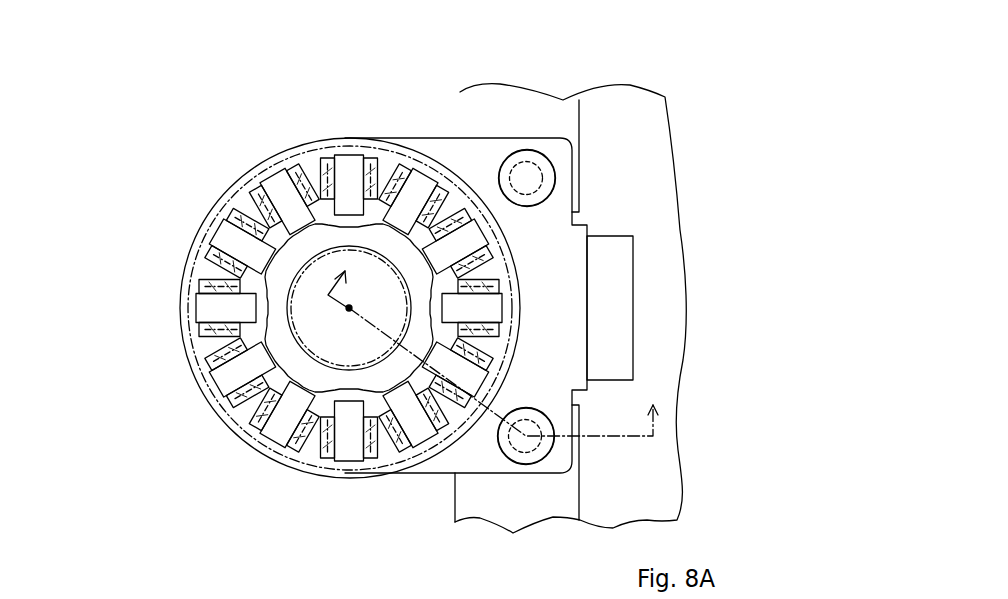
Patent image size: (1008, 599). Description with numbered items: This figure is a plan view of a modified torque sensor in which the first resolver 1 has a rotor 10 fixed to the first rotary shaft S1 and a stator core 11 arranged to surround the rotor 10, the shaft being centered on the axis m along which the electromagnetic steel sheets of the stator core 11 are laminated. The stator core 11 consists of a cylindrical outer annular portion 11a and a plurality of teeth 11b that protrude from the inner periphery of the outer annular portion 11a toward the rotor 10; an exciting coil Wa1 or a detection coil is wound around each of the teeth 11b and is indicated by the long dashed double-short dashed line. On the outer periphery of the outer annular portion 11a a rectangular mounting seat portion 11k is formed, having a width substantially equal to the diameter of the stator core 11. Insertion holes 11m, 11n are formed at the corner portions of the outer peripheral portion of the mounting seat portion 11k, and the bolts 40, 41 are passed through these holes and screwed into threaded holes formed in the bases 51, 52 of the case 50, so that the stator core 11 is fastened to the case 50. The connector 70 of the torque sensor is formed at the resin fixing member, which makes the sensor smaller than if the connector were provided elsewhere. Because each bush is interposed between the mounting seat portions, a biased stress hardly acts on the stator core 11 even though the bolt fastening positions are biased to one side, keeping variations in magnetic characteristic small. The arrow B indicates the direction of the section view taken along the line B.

The first resolver 1 is at (525, 50).
The rotor 10 is at (358, 222).
The first rotary shaft S1 is at (310, 256).
The stator core 11 is at (266, 460).
The outer annular portion 11a is at (222, 418).
The teeth 11b is at (213, 348).
The exciting coil Wa1 is at (196, 285).
The mounting seat portion 11k is at (422, 478).
The insertion hole 11m is at (511, 176).
The insertion hole 11n is at (503, 453).
The bolt 40 is at (554, 196).
The bolt 41 is at (555, 423).
The case 50 is at (686, 302).
The base 51 is at (582, 127).
The base 52 is at (580, 492).
The connector 70 is at (607, 236).
The axis m is at (349, 312).
The section line B- B is at (487, 350).